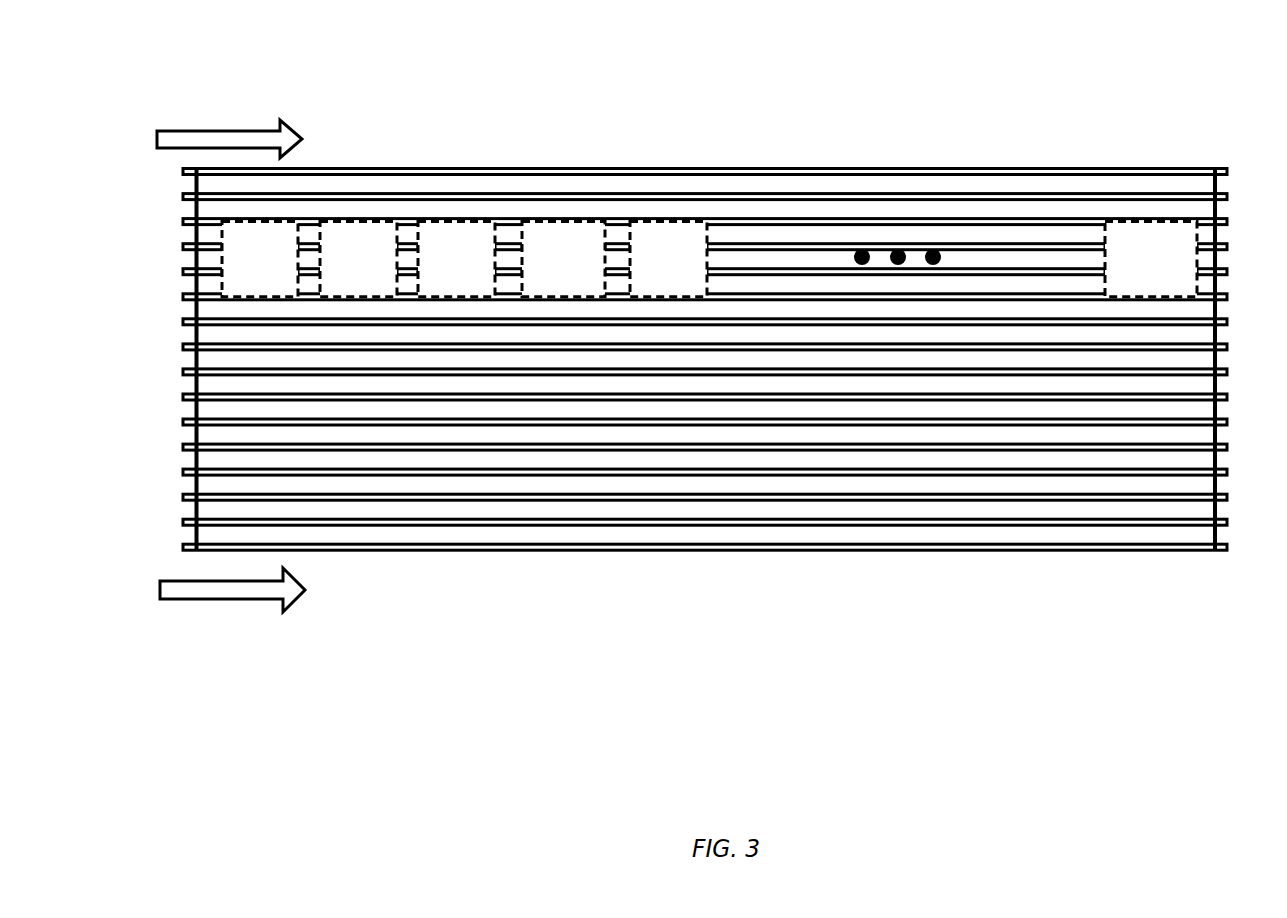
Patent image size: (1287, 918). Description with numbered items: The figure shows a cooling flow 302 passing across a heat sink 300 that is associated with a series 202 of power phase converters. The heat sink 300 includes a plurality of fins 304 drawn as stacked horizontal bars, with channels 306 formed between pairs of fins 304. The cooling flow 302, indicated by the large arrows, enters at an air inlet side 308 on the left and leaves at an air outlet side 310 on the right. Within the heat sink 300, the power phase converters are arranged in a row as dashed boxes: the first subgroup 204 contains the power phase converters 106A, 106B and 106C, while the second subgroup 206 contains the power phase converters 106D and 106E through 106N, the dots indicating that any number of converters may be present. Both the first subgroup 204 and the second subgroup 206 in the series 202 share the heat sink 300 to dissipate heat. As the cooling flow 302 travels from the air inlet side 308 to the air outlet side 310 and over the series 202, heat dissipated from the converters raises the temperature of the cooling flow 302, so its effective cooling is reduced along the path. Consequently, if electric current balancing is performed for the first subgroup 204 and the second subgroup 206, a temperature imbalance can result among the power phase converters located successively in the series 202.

The heat sink 300 is at (662, 91).
The cooling flow 302 is at (195, 128).
The fins 304 is at (979, 168).
The channels 306 is at (842, 189).
The air inlet side 308 is at (167, 188).
The air outlet side 310 is at (1242, 172).
The series of power phase converters 202 is at (732, 232).
The first subgroup 204 is at (262, 308).
The second subgroup 206 is at (702, 309).
The power phase converter 106A is at (236, 285).
The power phase converter 106B is at (334, 285).
The power phase converter 106C is at (432, 285).
The power phase converter 106D is at (588, 285).
The power phase converter 106E is at (644, 285).
The power phase converter 106N is at (1127, 285).